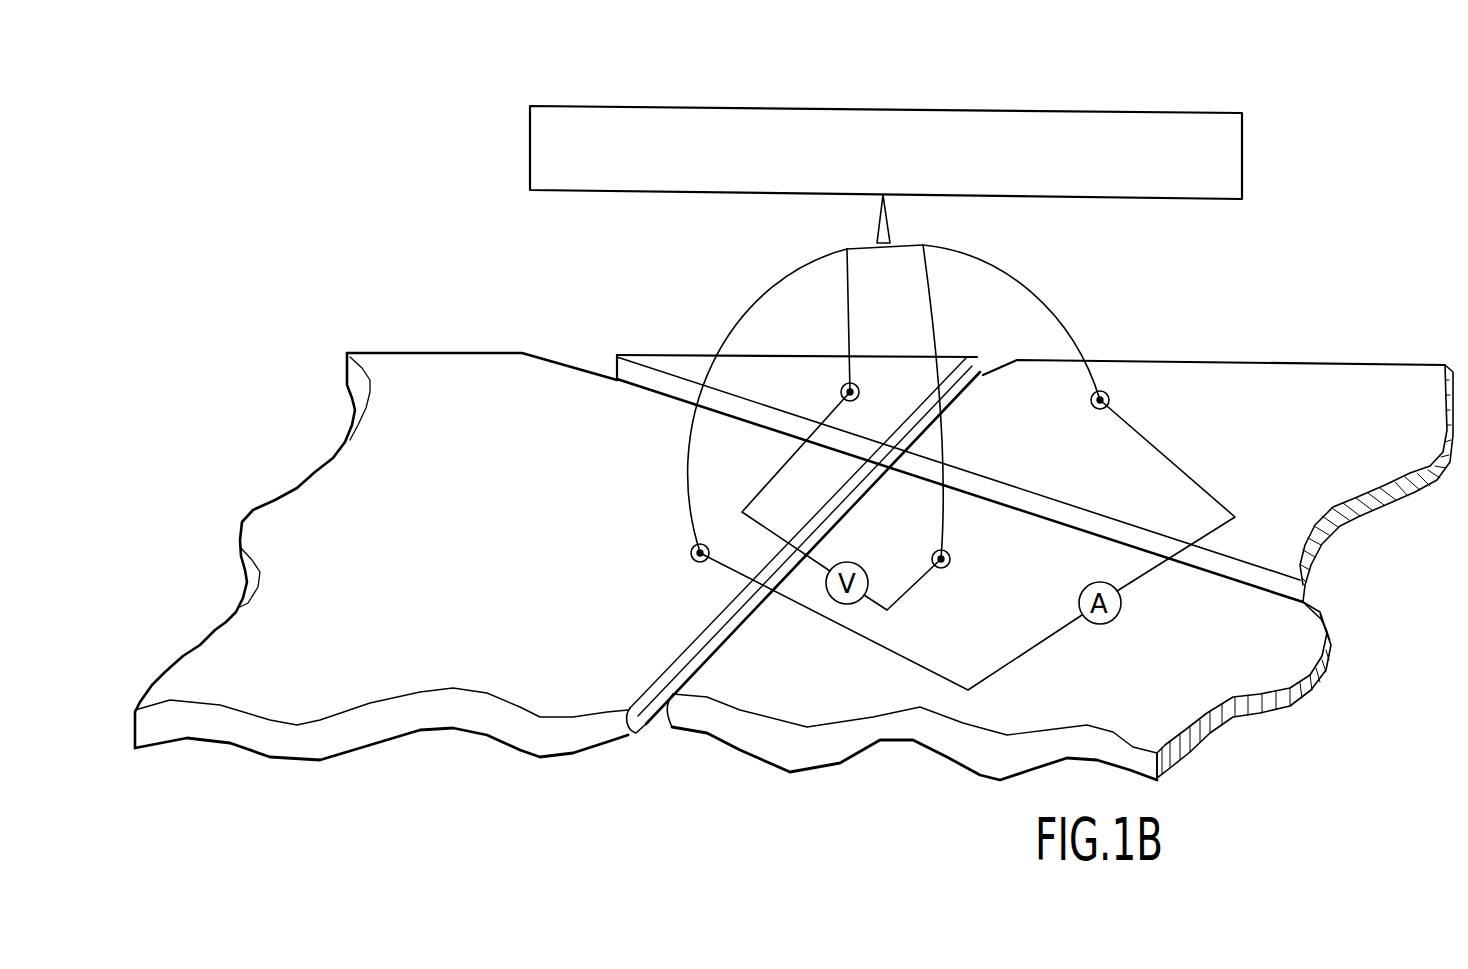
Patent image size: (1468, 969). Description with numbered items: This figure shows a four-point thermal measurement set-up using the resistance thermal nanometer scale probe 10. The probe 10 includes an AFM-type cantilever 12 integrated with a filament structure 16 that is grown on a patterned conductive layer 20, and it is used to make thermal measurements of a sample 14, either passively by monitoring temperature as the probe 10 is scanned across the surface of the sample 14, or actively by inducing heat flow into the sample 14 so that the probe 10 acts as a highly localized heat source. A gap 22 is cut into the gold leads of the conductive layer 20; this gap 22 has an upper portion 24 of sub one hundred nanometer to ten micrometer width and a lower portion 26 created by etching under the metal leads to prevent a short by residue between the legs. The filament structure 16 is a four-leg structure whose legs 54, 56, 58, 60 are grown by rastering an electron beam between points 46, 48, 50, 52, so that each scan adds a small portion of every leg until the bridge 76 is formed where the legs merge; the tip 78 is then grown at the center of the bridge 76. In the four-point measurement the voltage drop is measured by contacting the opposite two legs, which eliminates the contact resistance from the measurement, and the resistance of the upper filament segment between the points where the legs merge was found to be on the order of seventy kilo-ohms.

The resistance thermal nanometer scale probe 10 is at (1323, 253).
The AFM-type cantilever 12 is at (163, 634).
The sample 14 is at (908, 122).
The filament structure 16 is at (733, 302).
The patterned conductive layer 20 is at (1407, 410).
The gap 22 is at (978, 393).
The upper portion of gap 24 is at (647, 694).
The lower portion of gap 26 is at (650, 730).
The point 46 is at (690, 553).
The point 48 is at (860, 392).
The point 50 is at (1108, 396).
The point 52 is at (949, 560).
The leg 54 is at (847, 267).
The leg 56 is at (690, 433).
The leg 58 is at (1040, 300).
The leg 60 is at (950, 448).
The bridge 76 is at (867, 244).
The tip 78 is at (893, 222).